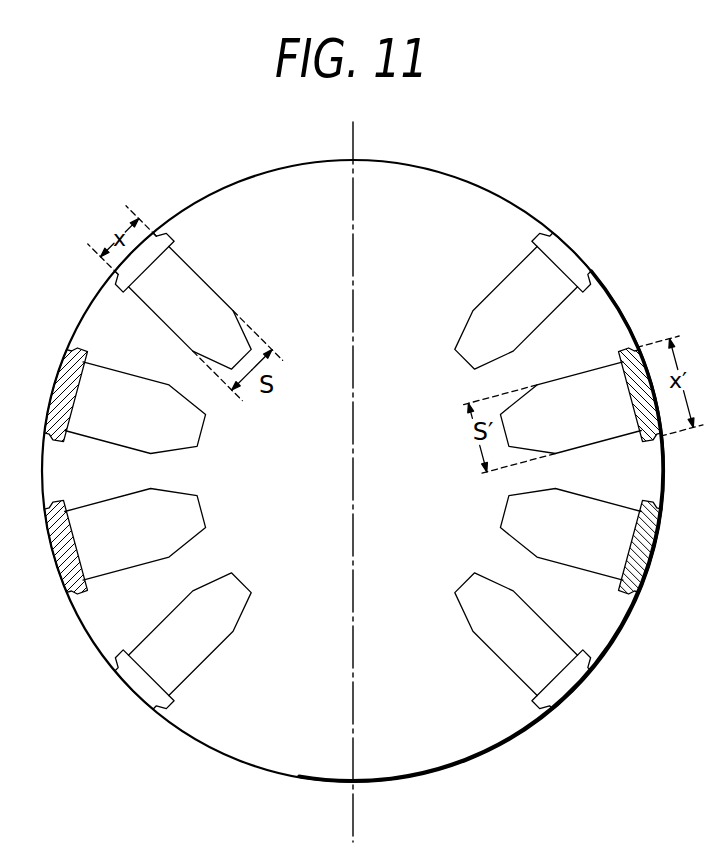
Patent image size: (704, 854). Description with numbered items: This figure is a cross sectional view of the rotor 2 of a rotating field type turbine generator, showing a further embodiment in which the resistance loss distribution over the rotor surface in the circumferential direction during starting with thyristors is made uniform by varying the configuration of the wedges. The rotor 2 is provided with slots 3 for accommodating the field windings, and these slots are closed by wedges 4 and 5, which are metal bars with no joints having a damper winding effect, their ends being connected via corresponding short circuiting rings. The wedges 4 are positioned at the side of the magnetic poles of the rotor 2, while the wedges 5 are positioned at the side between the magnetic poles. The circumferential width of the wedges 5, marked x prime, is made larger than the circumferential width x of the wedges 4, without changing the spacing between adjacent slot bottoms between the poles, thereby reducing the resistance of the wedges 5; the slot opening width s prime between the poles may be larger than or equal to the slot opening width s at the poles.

The rotor 2 is at (450, 190).
The slots 3 is at (470, 353).
The wedges 4 is at (566, 259).
The wedges 5 is at (620, 340).